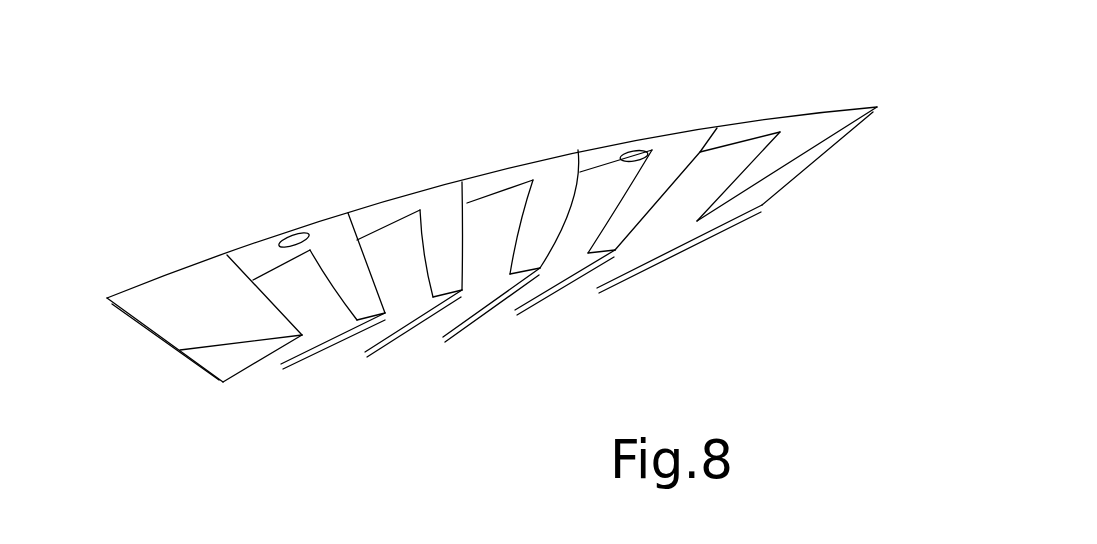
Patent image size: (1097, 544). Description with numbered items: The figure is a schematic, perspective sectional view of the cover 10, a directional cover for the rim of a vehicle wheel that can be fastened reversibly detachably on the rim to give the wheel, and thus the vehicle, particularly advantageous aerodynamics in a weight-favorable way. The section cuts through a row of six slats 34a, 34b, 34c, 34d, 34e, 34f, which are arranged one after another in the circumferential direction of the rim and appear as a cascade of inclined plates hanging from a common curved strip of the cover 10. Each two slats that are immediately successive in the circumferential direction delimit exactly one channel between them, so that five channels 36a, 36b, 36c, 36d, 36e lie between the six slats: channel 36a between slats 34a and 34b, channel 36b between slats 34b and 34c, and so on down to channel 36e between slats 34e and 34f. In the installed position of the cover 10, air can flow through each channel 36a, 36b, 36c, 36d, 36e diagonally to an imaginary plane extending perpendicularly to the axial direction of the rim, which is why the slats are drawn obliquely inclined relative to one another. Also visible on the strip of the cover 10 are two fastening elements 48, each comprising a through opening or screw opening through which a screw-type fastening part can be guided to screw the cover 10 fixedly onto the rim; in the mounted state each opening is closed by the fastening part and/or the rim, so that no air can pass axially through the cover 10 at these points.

The cover 10 is at (679, 116).
The slat 34a is at (778, 170).
The slat 34b is at (628, 212).
The slat 34c is at (552, 187).
The slat 34d is at (441, 222).
The slat 34e is at (340, 262).
The slat 34f is at (230, 337).
The channel 36a is at (637, 273).
The channel 36b is at (547, 285).
The channel 36c is at (461, 314).
The channel 36d is at (385, 332).
The channel 36e is at (291, 369).
The fastening element 48 is at (277, 226).